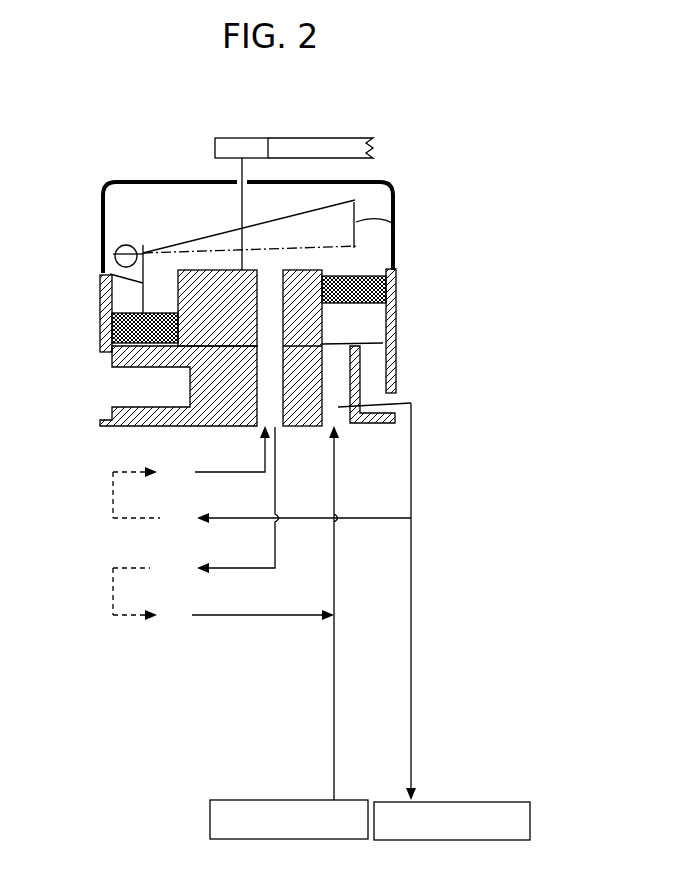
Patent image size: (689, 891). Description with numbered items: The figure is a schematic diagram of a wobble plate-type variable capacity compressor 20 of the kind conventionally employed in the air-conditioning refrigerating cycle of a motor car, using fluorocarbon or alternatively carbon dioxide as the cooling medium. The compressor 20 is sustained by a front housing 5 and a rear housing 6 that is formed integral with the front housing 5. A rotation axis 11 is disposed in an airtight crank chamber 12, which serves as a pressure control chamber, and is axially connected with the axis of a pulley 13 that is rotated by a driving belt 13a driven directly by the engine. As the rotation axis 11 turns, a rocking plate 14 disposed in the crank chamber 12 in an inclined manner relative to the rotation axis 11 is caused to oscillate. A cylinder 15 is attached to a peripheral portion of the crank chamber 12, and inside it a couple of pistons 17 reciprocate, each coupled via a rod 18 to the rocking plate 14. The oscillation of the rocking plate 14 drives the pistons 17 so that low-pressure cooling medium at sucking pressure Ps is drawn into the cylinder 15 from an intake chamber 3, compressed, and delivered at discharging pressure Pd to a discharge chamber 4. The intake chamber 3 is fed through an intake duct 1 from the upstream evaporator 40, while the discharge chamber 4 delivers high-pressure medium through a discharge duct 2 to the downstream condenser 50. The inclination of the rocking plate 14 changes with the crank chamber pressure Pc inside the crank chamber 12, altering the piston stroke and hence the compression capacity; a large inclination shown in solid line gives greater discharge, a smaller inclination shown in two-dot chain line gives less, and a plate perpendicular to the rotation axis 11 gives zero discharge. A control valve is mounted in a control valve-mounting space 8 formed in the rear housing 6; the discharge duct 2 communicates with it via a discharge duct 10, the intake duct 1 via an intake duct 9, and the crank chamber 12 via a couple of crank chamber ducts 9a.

The intake duct 1 is at (334, 722).
The discharge duct 2 is at (411, 660).
The intake chamber 3 is at (411, 403).
The discharge chamber 4 is at (375, 366).
The front housing 5 is at (397, 200).
The rear housing 6 is at (162, 431).
The control valve-mounting space 8 is at (125, 382).
The intake duct 9 is at (258, 615).
The crank chamber ducts 9a is at (230, 472).
The discharge duct 10 is at (255, 518).
The rotation axis 11 is at (238, 195).
The crank chamber 12 is at (115, 193).
The pulley 13 is at (247, 138).
The driving belt 13a is at (328, 138).
The rocking plate 14 is at (143, 250).
The cylinder 15 is at (100, 296).
The pistons 17 is at (100, 324).
The rod 18 is at (100, 273).
The wobble plate-type variable capacity compressor 20 is at (404, 179).
The evaporator 40 is at (210, 810).
The condenser 50 is at (530, 812).